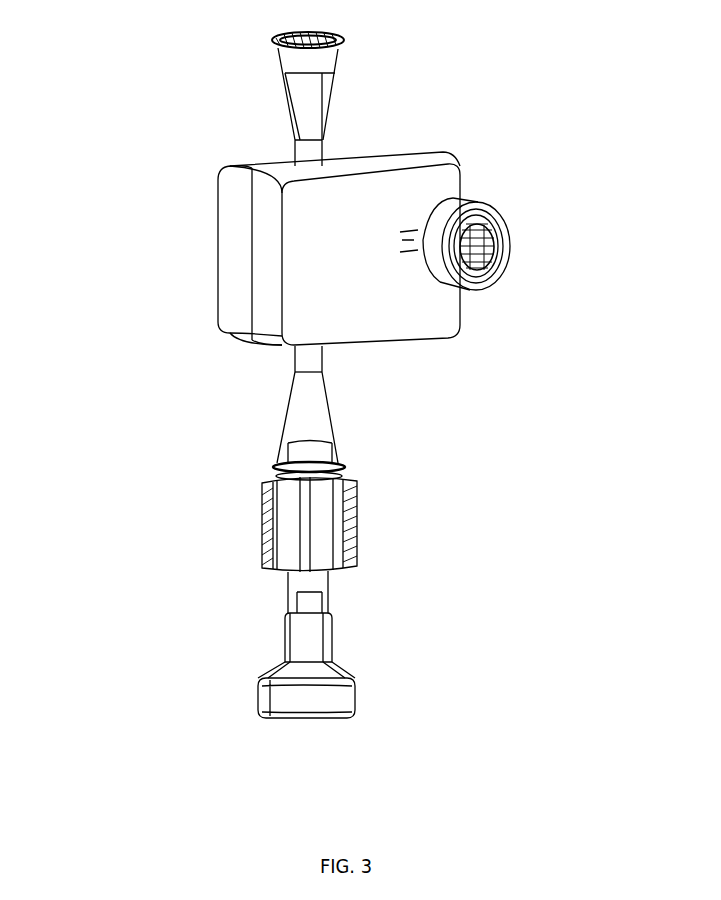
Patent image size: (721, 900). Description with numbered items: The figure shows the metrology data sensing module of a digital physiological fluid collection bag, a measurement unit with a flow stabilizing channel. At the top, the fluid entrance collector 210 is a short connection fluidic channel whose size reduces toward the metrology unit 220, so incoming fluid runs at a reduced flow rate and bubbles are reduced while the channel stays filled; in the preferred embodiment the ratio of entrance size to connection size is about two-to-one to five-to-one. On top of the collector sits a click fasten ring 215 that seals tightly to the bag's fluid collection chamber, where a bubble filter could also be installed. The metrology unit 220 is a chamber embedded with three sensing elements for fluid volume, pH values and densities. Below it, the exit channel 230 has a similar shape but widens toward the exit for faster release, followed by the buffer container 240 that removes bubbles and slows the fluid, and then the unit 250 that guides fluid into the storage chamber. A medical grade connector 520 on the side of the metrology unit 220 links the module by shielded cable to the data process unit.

The fluid entrance collector 210 is at (308, 96).
The click fasten ring 215 is at (345, 37).
The metrology unit 220 is at (315, 242).
The exit channel 230 is at (312, 434).
The buffer container 240 is at (318, 545).
The unit after the buffer 250 is at (312, 647).
The medical grade connector 520 is at (490, 245).